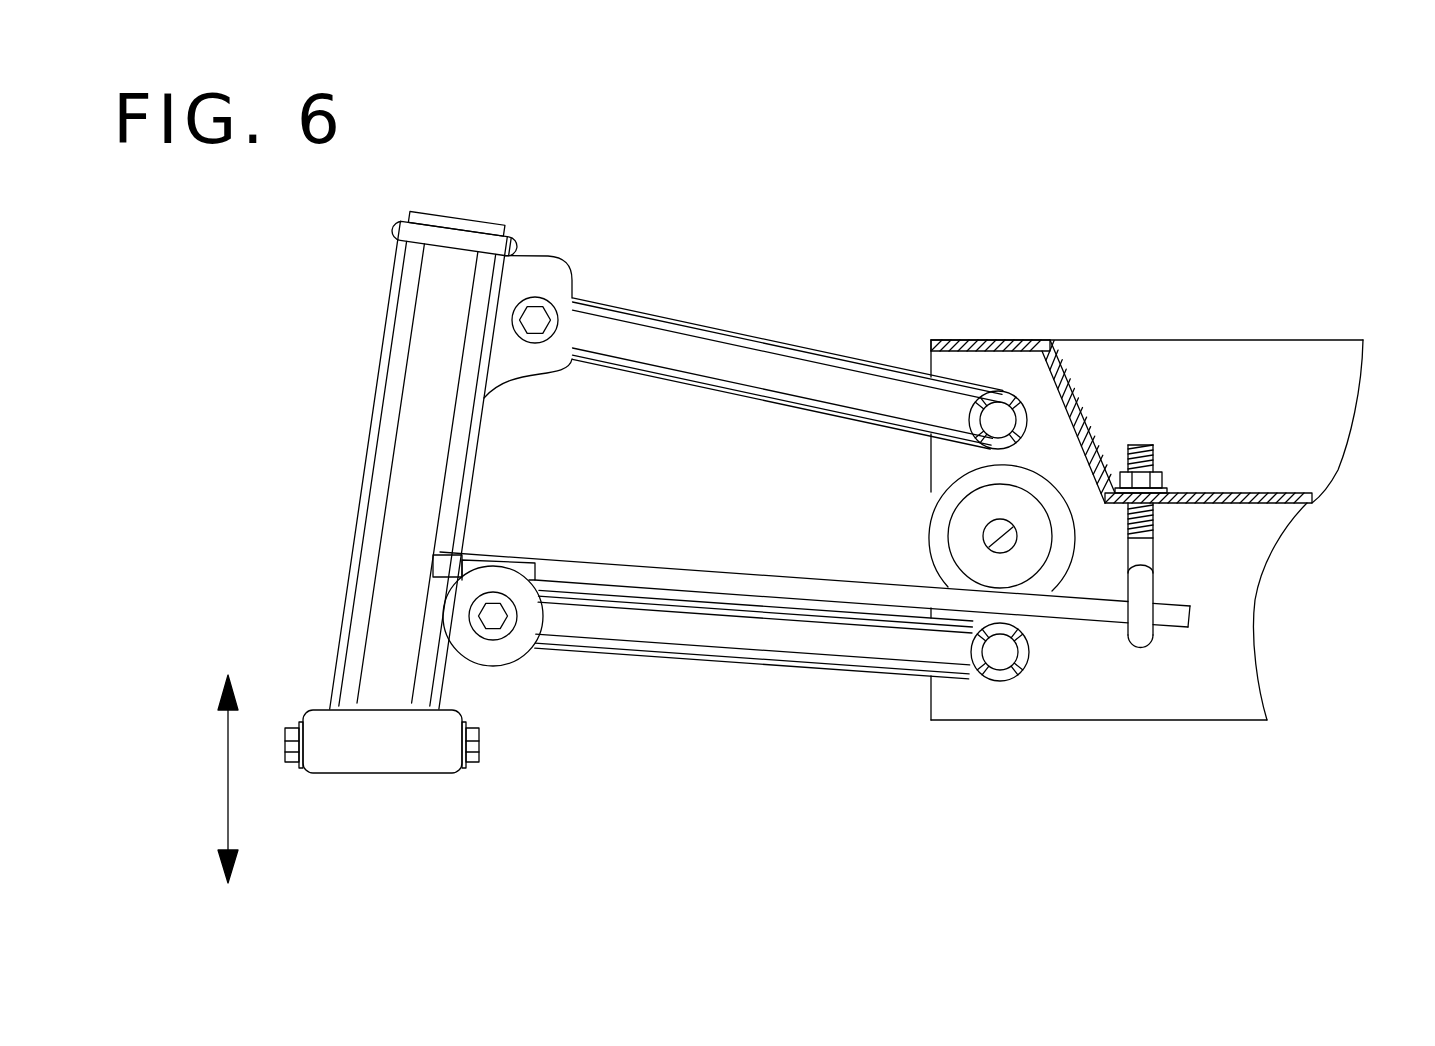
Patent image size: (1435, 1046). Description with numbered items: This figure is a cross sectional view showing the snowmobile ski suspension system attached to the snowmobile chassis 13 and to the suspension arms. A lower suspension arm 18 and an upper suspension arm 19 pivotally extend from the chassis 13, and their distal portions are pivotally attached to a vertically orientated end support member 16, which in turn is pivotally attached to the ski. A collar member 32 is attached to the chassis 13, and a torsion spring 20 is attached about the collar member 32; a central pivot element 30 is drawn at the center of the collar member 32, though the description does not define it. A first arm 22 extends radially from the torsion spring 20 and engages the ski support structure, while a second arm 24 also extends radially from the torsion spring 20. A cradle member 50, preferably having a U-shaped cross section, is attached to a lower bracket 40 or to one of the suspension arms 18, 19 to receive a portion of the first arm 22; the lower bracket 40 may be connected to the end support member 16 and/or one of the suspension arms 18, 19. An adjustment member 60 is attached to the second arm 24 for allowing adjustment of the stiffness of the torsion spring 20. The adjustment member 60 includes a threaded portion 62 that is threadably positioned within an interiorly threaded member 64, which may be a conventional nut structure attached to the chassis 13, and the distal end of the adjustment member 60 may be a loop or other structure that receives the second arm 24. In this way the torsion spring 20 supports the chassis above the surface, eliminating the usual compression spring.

The chassis 13 is at (1060, 340).
The end support member 16 is at (408, 498).
The lower suspension arm 18 is at (723, 647).
The upper suspension arm 19 is at (748, 357).
The torsion spring 20 is at (938, 557).
The first arm 22 is at (668, 580).
The second arm 24 is at (1100, 612).
The pivot pin 30 is at (988, 525).
The collar member 32 is at (983, 572).
The lower bracket 40 is at (500, 657).
The cradle member 50 is at (432, 582).
The adjustment member 60 is at (1143, 622).
The threaded portion 62 is at (1153, 445).
The interiorly threaded member 64 is at (1150, 478).